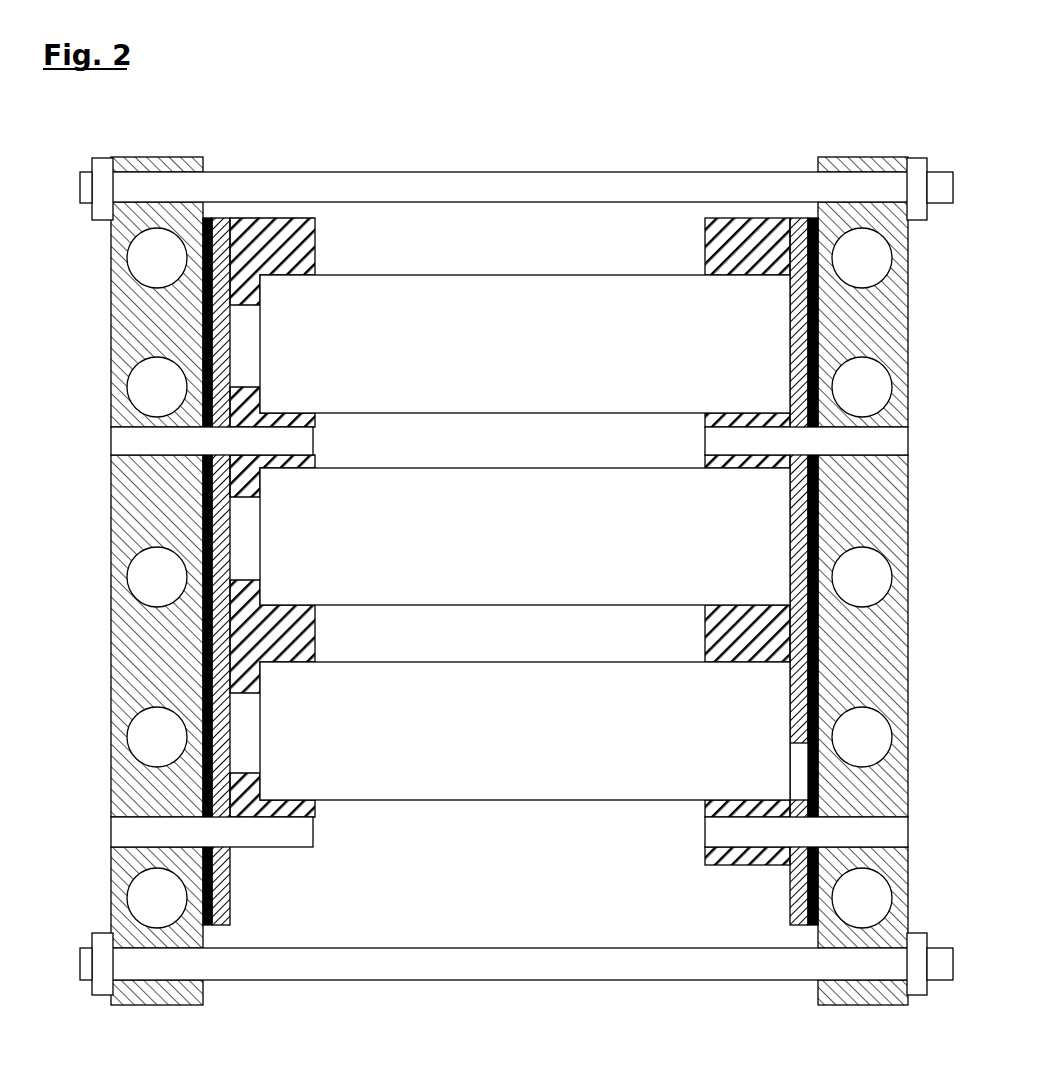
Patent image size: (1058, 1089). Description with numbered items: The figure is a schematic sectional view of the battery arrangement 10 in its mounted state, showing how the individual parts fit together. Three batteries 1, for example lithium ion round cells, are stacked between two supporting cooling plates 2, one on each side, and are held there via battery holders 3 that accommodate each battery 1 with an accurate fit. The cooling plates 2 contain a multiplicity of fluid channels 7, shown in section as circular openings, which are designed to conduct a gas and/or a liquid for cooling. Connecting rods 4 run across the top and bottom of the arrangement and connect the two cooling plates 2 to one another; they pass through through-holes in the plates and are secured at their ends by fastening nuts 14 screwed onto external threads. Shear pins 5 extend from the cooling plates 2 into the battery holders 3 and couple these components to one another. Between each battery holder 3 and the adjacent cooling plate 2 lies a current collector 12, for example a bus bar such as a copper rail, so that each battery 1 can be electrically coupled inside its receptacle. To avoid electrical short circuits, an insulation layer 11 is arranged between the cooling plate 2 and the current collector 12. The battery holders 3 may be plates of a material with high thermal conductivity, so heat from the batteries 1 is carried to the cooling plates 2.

The battery 1 is at (491, 359).
The cooling plate 2 is at (111, 320).
The battery holder 3 is at (318, 226).
The connecting rod 4 is at (445, 172).
The shear pin 5 is at (118, 440).
The fluid channel 7 is at (165, 271).
The battery arrangement 10 is at (242, 66).
The insulation layer 11 is at (228, 517).
The current collector 12 is at (792, 340).
The fastening nut 14 is at (918, 160).